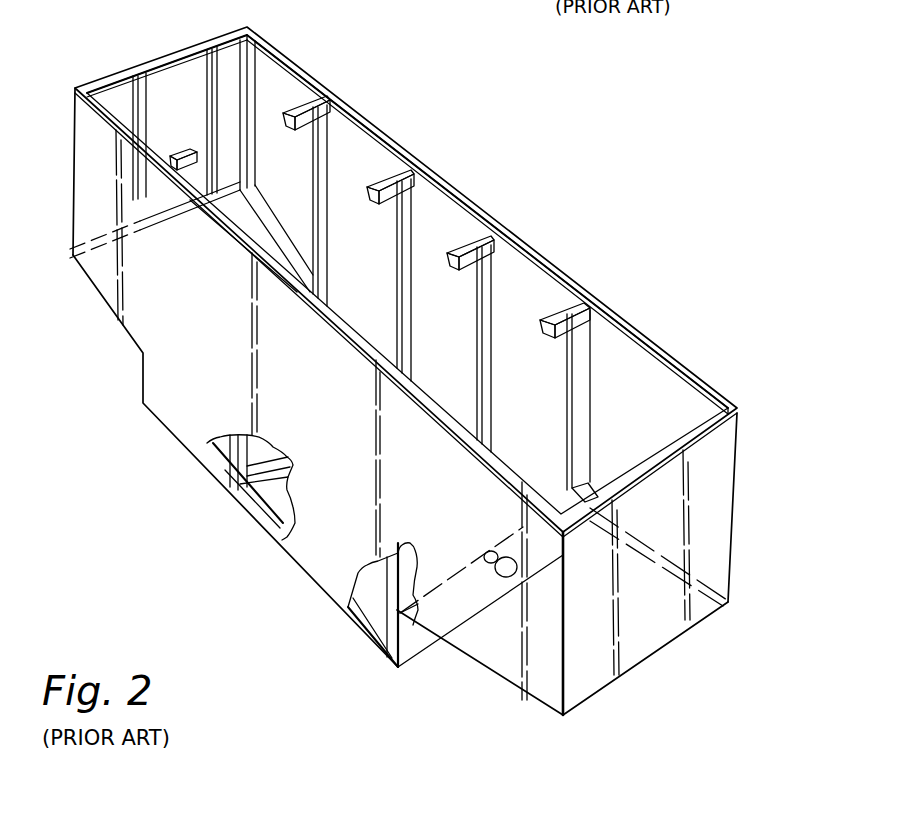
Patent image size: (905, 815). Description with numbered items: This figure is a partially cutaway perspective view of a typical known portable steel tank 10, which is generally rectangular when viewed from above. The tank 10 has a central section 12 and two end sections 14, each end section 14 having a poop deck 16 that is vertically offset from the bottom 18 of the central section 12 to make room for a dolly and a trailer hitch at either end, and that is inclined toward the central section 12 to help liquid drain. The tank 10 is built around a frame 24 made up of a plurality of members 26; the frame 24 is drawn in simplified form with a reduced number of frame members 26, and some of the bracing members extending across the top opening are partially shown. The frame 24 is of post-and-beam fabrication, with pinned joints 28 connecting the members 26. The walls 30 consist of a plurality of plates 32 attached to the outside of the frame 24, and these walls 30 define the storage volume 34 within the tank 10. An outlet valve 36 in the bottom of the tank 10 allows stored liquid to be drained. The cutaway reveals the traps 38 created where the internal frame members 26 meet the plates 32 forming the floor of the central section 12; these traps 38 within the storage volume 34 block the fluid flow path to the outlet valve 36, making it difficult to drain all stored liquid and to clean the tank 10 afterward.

The portable steel tank 10 is at (403, 388).
The central section 12 is at (272, 515).
The end section 14 is at (72, 211).
The poop deck 16 is at (112, 312).
The bottom 18 is at (212, 468).
The frame 24 is at (480, 207).
The frame member 26 is at (257, 72).
The pinned joint 28 is at (347, 133).
The wall 30 is at (680, 400).
The plate 32 is at (87, 158).
The storage volume 34 is at (185, 88).
The outlet valve 36 is at (497, 578).
The trap 38 is at (208, 468).